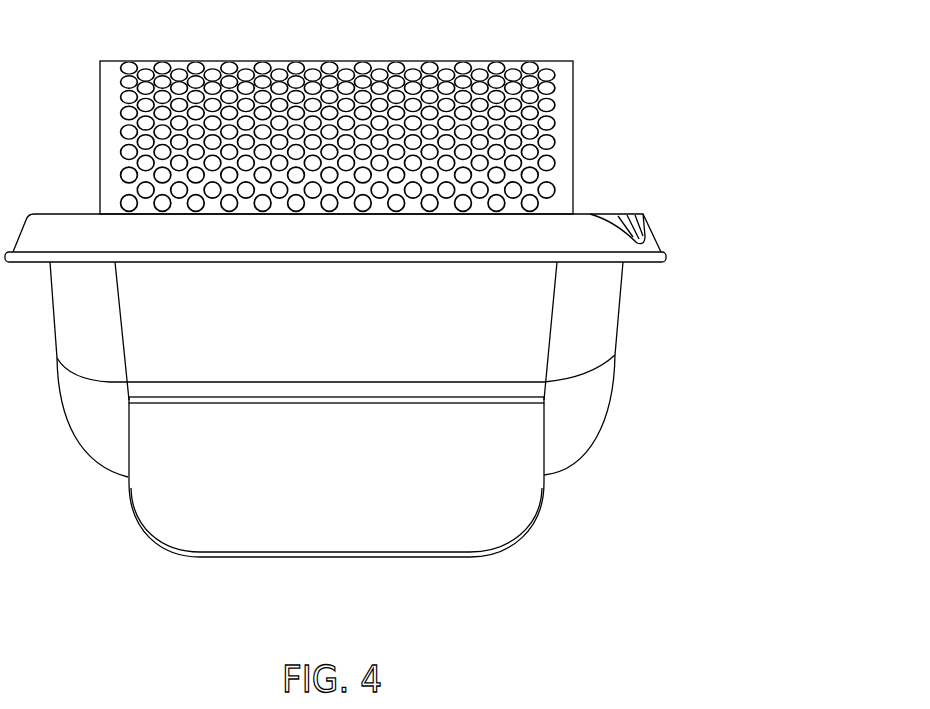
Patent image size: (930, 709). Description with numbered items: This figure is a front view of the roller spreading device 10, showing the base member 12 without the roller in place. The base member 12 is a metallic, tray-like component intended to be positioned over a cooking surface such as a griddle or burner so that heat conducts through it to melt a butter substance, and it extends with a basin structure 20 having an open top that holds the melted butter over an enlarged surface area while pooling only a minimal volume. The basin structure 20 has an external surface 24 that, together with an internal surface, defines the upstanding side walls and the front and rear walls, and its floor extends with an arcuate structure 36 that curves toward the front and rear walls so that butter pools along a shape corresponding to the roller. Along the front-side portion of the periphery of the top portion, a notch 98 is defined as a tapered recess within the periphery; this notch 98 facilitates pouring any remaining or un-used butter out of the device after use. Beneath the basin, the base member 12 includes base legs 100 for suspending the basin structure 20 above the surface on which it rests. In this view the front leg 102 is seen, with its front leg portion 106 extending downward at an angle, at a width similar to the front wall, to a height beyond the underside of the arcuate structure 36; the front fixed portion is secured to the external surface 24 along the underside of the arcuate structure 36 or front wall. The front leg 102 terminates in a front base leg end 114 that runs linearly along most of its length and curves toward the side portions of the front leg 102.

The roller spreading device 10 is at (374, 324).
The base member 12 is at (620, 386).
The basin structure 20 is at (615, 425).
The external surface 24 is at (617, 364).
The arcuate structure 36 is at (557, 482).
The notch 98 is at (650, 210).
The base legs 100 is at (376, 521).
The front leg 102 is at (530, 534).
The front leg portion 106 is at (484, 528).
The front base leg end 114 is at (200, 558).